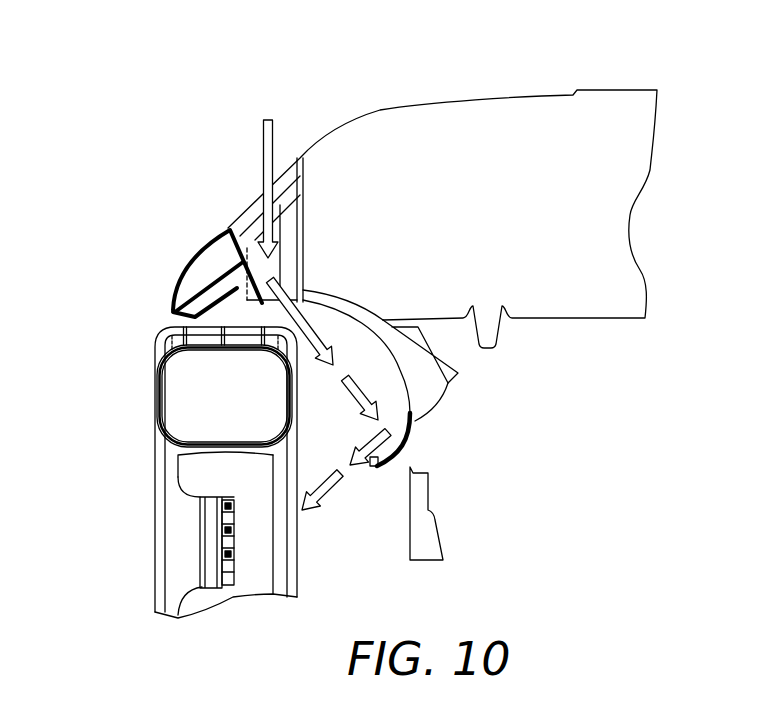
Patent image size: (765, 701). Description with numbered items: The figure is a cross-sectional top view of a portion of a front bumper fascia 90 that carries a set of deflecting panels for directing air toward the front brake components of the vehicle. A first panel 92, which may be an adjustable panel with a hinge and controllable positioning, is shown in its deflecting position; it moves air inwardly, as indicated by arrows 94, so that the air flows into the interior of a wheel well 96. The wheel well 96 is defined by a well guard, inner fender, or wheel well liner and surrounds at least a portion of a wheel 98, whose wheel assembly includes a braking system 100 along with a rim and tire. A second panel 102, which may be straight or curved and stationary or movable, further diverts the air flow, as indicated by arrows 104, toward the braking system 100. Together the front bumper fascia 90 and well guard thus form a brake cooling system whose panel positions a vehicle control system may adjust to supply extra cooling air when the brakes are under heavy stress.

The front bumper fascia 90 is at (355, 86).
The first panel 92 is at (214, 248).
The arrows 94 is at (303, 340).
The wheel well 96 is at (345, 577).
The wheel 98 is at (155, 448).
The braking system 100 is at (233, 552).
The second panel 102 is at (434, 448).
The arrows 104 is at (376, 462).